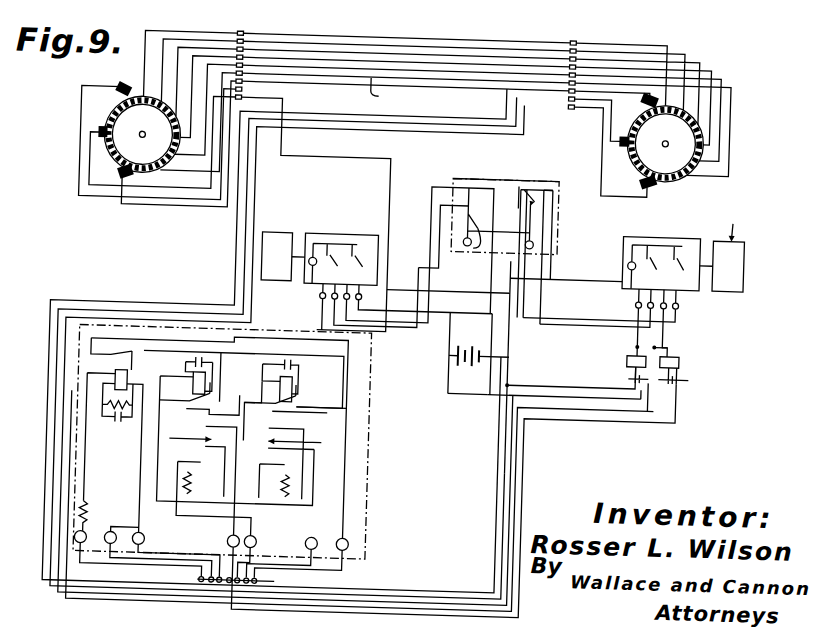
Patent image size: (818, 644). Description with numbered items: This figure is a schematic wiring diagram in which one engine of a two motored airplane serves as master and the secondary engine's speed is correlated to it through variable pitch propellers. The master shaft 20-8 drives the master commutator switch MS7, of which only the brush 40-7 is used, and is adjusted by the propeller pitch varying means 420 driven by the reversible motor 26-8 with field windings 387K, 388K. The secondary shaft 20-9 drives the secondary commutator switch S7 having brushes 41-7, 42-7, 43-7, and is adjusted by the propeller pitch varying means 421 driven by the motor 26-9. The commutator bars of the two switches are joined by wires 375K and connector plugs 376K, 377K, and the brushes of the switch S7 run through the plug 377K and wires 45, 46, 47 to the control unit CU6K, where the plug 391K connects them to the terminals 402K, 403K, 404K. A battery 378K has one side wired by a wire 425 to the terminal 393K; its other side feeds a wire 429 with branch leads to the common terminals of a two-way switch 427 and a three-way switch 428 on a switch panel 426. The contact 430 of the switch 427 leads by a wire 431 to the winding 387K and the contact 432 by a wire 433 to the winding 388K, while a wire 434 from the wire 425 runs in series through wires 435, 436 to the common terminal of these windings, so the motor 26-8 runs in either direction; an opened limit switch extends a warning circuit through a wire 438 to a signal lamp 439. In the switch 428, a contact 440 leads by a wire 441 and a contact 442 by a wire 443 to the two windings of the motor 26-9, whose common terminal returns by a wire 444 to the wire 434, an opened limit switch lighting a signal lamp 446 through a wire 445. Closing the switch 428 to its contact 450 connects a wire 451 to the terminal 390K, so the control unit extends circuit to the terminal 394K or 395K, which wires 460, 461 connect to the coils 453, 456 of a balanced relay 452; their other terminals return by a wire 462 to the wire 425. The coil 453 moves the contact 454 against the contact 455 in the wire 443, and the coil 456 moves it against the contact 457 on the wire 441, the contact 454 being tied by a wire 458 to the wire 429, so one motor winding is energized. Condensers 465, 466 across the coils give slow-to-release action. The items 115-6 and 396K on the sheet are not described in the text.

The connector plug 376K is at (229, 36).
The connector plug 377K is at (566, 36).
The cable conductors 115-6 is at (455, 1).
The wires 375K is at (396, 92).
The wire 45 is at (400, 117).
The wire 46 is at (324, 132).
The wire 47 is at (455, 123).
The master commutator switch MS7 is at (97, 143).
The master shaft 20-8 is at (137, 145).
The brush 40-7 is at (116, 179).
The secondary commutator switch S7 is at (699, 134).
The secondary shaft 20-9 is at (660, 139).
The brush 43-7 is at (637, 96).
The brush 41-7 is at (617, 139).
The brush 42-7 is at (640, 177).
The contact 432 is at (490, 186).
The switch panel 426 is at (462, 176).
The two-way switch 427 is at (472, 176).
The contact 442 is at (517, 189).
The stationary contact 430 is at (493, 227).
The signal lamp 439 is at (478, 248).
The signal lamp 446 is at (532, 241).
The contact 440 is at (550, 192).
The contact 450 is at (553, 216).
The three-way switch 428 is at (541, 177).
The wire 429 is at (448, 288).
The wire 435 is at (448, 311).
The wire 431 is at (419, 324).
The wire 433 is at (420, 258).
The wire 438 is at (428, 267).
The wire 436 is at (386, 340).
The propeller pitch varying means 420 is at (286, 239).
The field winding 387K is at (340, 248).
The field winding 388K is at (360, 250).
The reversible motor 26-8 is at (312, 290).
The wire 434 is at (511, 355).
The battery 378K is at (467, 366).
The wire 443 is at (512, 385).
The wire 425 is at (508, 466).
The wire 451 is at (501, 491).
The wire 441 is at (570, 377).
The wire 461 is at (519, 444).
The wire 460 is at (528, 474).
The relay 396K is at (680, 299).
The propeller pitch varying means 421 is at (738, 283).
The motor 26-9 is at (622, 284).
The wire 444 is at (593, 275).
The wire 445 is at (570, 276).
The contact 455 is at (636, 340).
The contact 457 is at (667, 339).
The contact 454 is at (669, 341).
The actuating coil 453 is at (628, 356).
The coil 456 is at (681, 355).
The wire 462 is at (630, 373).
The balanced relay 452 is at (691, 373).
The condenser 466 is at (682, 379).
The wire 458 is at (652, 405).
The condenser 465 is at (643, 395).
The control unit CU6K is at (375, 448).
The terminal 402K is at (92, 541).
The terminal 403K is at (118, 552).
The terminal 404K is at (151, 547).
The control terminal 394K is at (243, 540).
The control terminal 395K is at (312, 550).
The terminal 390K is at (324, 540).
The terminal 393K is at (356, 547).
The plug 391K is at (282, 586).